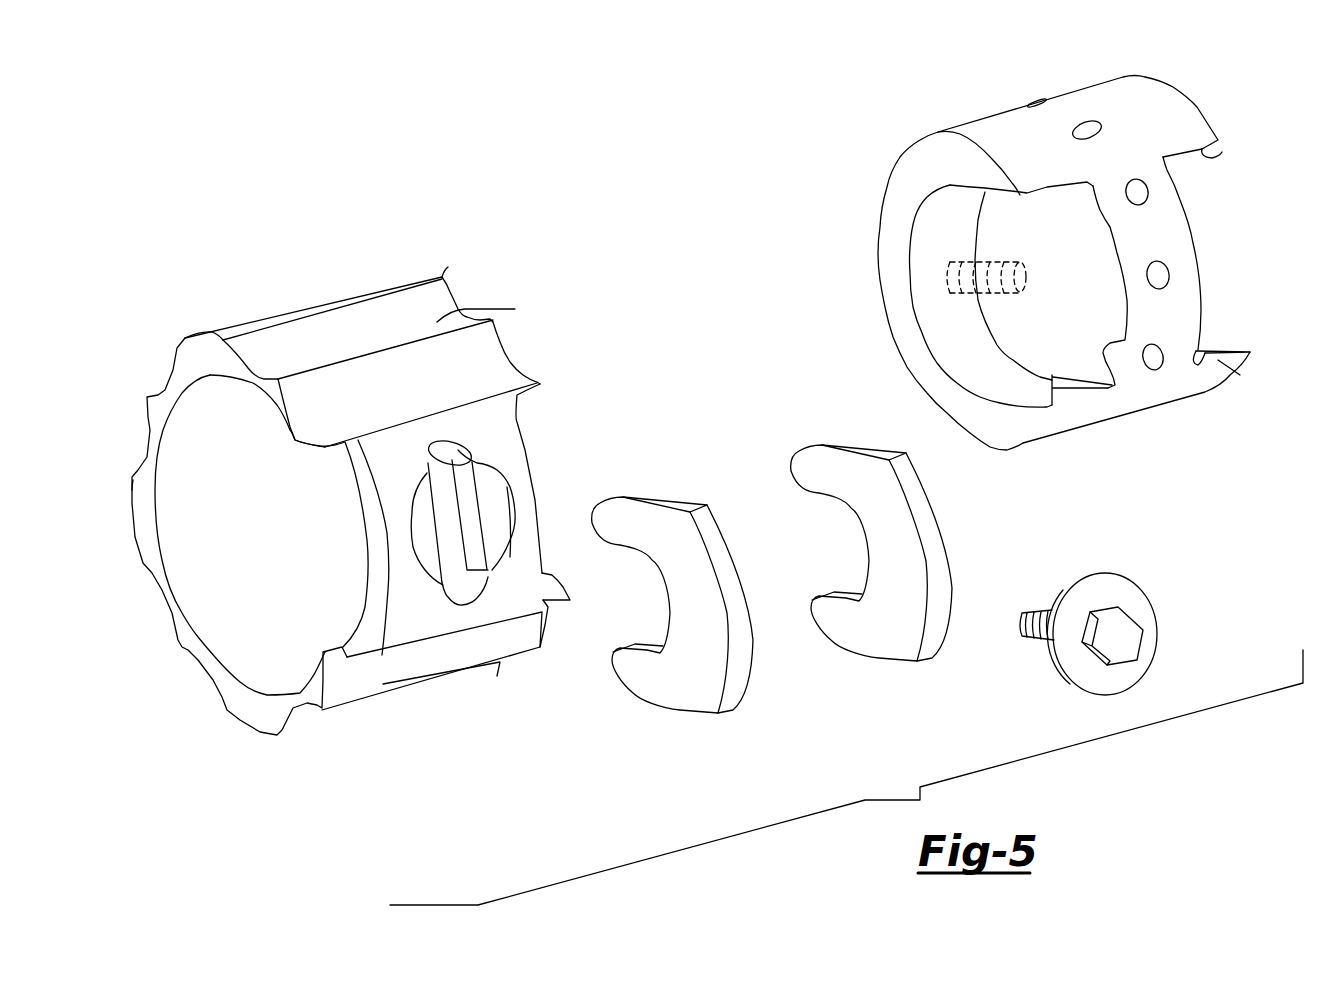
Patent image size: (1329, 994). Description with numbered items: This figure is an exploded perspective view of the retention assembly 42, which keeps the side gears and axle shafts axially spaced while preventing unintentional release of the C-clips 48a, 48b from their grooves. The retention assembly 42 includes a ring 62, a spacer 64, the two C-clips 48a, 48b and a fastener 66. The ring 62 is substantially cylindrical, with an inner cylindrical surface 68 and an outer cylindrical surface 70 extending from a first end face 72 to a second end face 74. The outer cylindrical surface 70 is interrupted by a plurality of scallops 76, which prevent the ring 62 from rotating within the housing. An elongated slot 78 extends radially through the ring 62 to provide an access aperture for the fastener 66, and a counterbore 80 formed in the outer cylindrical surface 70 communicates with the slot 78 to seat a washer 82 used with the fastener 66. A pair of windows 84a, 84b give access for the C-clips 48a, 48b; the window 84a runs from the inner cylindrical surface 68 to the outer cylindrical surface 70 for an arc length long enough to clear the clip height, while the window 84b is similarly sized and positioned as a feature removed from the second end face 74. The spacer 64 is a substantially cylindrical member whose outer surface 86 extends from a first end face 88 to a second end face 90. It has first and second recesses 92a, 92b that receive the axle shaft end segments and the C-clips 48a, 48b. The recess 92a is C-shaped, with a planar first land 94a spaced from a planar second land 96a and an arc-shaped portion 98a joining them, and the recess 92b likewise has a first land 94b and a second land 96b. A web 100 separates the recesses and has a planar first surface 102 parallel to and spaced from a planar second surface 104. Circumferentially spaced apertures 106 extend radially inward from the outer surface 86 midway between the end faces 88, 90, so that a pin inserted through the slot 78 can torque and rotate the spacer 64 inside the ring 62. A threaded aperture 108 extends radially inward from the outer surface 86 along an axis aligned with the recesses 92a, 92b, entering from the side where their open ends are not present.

The retention assembly 42 is at (412, 176).
The C-clip 48a is at (663, 697).
The C-clip 48b is at (883, 650).
The ring 62 is at (190, 348).
The spacer 64 is at (1040, 78).
The fastener 66 is at (1127, 628).
The inner cylindrical surface 68 is at (290, 690).
The outer cylindrical surface 70 is at (352, 297).
The first end face 72 is at (136, 483).
The second end face 74 is at (448, 267).
The scallops 76 is at (477, 355).
The elongated slot 78 is at (448, 452).
The counterbore 80 is at (497, 500).
The washer 82 is at (1053, 653).
The window 84a is at (371, 580).
The window 84b is at (572, 600).
The outer surface 86 is at (1192, 123).
The first end face 88 is at (928, 146).
The second end face 90 is at (1168, 82).
The first recess 92a is at (1062, 395).
The second recess 92b is at (1217, 353).
The first land 94a is at (1053, 387).
The first land 94b is at (1200, 345).
The second land 96a is at (1003, 197).
The second land 96b is at (1222, 155).
The arc-shaped portion 98a is at (980, 328).
The web 100 is at (1113, 322).
The first surface 102 is at (1077, 197).
The second surface 104 is at (1199, 250).
The apertures 106 is at (1137, 190).
The threaded aperture 108 is at (944, 278).